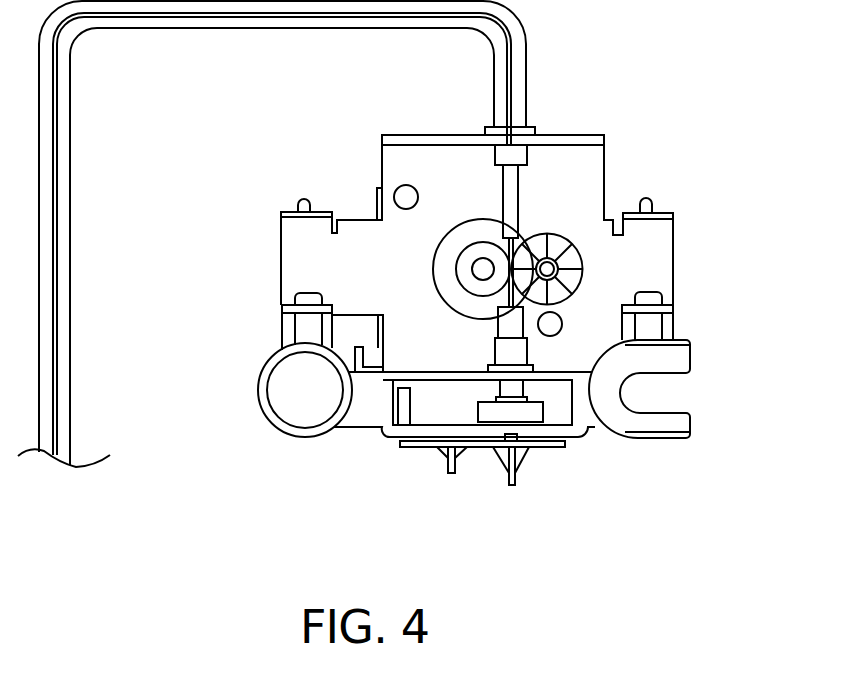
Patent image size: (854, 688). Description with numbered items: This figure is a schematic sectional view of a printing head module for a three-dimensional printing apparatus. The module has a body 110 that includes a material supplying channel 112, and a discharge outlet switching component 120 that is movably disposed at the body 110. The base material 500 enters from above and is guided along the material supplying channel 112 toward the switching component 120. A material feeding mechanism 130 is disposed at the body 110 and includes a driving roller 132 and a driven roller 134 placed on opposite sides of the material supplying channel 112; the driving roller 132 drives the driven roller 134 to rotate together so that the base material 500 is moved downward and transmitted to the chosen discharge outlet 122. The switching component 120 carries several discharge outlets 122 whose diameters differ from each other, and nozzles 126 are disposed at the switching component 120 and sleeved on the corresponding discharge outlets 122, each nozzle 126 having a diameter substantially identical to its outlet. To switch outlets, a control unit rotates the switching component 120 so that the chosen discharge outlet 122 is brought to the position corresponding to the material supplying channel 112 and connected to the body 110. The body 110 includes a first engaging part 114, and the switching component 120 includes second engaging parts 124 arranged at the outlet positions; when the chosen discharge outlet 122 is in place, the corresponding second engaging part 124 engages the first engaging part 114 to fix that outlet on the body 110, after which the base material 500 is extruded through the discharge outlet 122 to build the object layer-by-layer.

The base material 500 is at (512, 90).
The body 110 is at (605, 177).
The material supplying channel 112 is at (512, 223).
The material feeding mechanism 130 is at (367, 219).
The driving roller 132 is at (445, 272).
The driven roller 134 is at (528, 290).
The discharge outlet switching component 120 is at (542, 477).
The second engaging part 124 is at (551, 456).
The first engaging part 114 is at (567, 442).
The discharge outlet 122 is at (526, 505).
The nozzle 126 is at (442, 449).